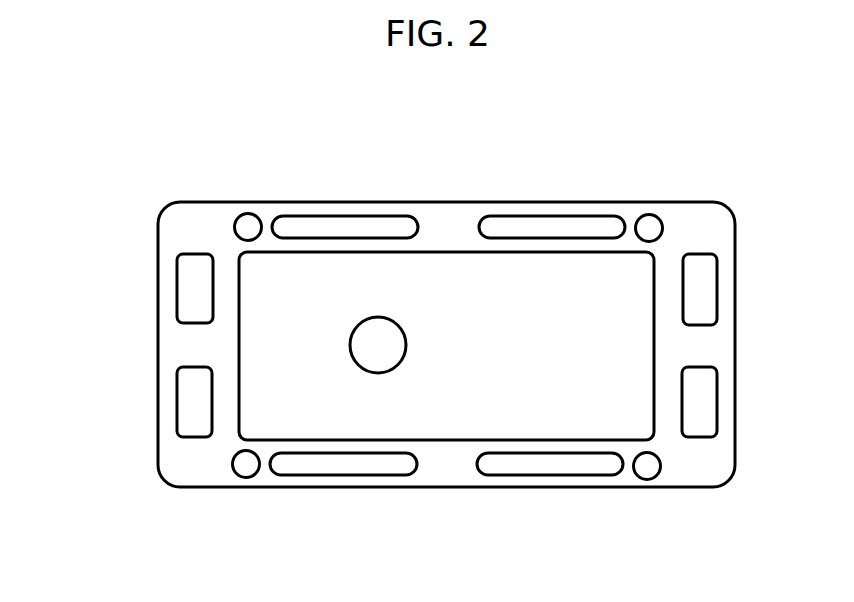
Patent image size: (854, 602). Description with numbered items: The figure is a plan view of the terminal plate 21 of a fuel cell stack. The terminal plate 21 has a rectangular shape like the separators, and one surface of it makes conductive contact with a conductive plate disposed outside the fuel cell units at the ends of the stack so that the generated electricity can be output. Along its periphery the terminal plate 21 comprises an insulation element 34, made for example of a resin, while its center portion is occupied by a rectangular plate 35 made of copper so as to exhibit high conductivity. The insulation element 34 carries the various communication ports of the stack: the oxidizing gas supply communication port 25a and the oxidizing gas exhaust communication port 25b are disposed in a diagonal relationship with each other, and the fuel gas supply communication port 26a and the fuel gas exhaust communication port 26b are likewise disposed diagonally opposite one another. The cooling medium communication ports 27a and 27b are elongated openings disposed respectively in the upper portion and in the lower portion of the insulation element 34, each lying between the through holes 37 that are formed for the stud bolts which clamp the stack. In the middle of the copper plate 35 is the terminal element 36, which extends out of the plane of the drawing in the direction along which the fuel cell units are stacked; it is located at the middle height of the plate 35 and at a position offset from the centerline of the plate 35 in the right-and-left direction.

The terminal plate 21 is at (594, 200).
The insulation element 34 is at (683, 222).
The plate 35 is at (567, 324).
The terminal element 36 is at (407, 338).
The through holes 37 is at (450, 222).
The cooling medium communication port 27a is at (333, 222).
The cooling medium communication port 27b is at (333, 465).
The oxidizing gas supply communication port 25a is at (188, 400).
The oxidizing gas exhaust communication port 25b is at (698, 268).
The fuel gas supply communication port 26a is at (698, 427).
The fuel gas exhaust communication port 26b is at (190, 295).